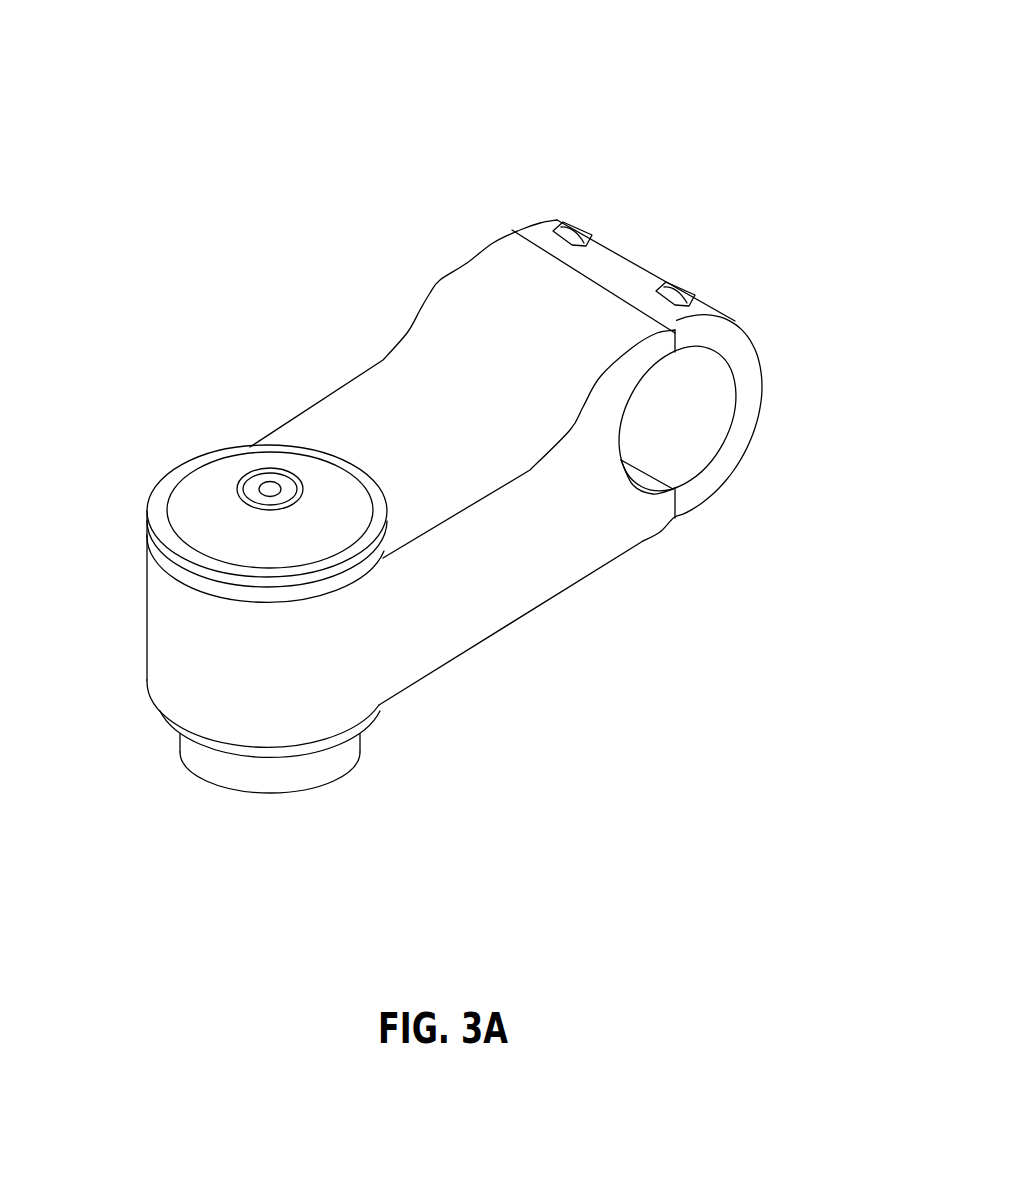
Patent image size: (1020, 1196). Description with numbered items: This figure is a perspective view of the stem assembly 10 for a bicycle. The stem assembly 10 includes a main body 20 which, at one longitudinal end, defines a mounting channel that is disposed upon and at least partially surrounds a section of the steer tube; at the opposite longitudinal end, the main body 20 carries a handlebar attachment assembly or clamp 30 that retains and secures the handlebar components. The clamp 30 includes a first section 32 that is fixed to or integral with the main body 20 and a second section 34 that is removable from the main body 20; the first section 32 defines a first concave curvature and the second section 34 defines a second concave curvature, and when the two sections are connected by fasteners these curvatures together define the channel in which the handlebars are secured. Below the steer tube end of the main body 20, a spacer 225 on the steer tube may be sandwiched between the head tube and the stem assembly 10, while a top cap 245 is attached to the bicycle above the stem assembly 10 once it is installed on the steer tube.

The stem assembly 10 is at (249, 280).
The main body 20 is at (515, 590).
The handlebar attachment assembly or clamp 30 is at (510, 179).
The first section 32 is at (517, 263).
The second section 34 is at (623, 270).
The spacer 225 is at (305, 778).
The top cap 245 is at (213, 508).